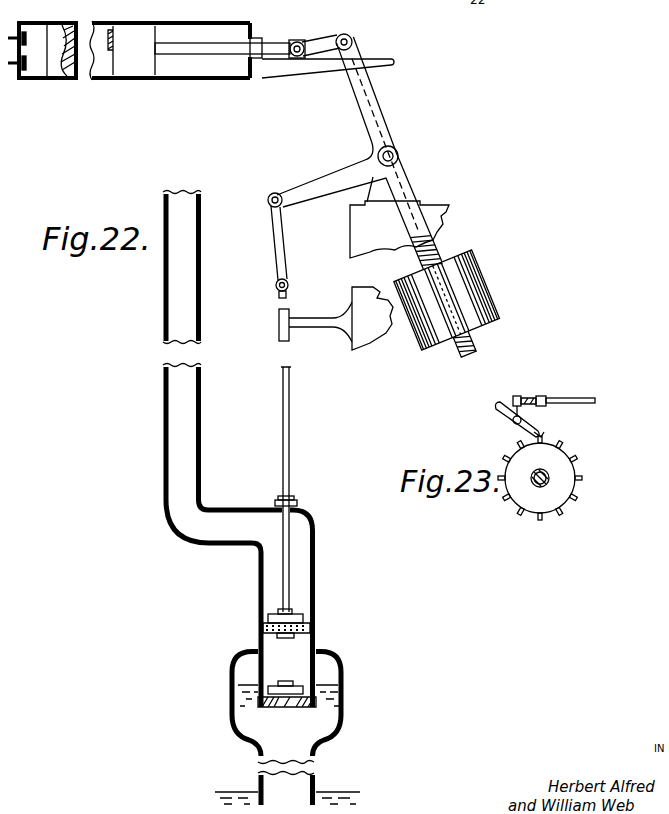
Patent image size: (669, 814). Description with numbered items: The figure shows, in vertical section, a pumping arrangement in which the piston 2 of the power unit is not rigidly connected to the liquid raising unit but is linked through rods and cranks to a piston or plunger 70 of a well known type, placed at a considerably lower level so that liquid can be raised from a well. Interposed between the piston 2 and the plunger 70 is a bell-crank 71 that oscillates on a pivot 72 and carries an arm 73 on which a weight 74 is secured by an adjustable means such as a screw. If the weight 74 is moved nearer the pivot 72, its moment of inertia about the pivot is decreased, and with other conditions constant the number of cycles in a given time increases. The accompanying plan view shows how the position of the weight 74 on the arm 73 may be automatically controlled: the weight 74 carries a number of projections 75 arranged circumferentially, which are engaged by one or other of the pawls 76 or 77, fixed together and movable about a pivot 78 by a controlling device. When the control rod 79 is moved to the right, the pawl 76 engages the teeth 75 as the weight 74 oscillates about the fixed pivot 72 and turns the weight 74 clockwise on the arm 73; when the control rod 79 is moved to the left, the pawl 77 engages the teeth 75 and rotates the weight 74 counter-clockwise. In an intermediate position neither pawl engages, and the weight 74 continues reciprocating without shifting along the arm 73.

In FIG. 22, the piston 2 is at (132, 58).
In FIG. 22, the piston or plunger 70 is at (267, 626).
In FIG. 22, the bell-crank 71 is at (375, 117).
In FIG. 22, the pivot 72 is at (398, 157).
In FIG. 22, the arm 73 is at (437, 248).
In FIG. 23, the arm 73 is at (550, 477).
In FIG. 22, the weight 74 is at (477, 292).
In FIG. 23, the weight 74 is at (527, 493).
In FIG. 23, the projections 75 is at (517, 513).
In FIG. 23, the pawl 76 is at (541, 433).
In FIG. 23, the pawl 77 is at (503, 418).
In FIG. 23, the pivot 78 is at (513, 425).
In FIG. 23, the control rod 79 is at (580, 397).